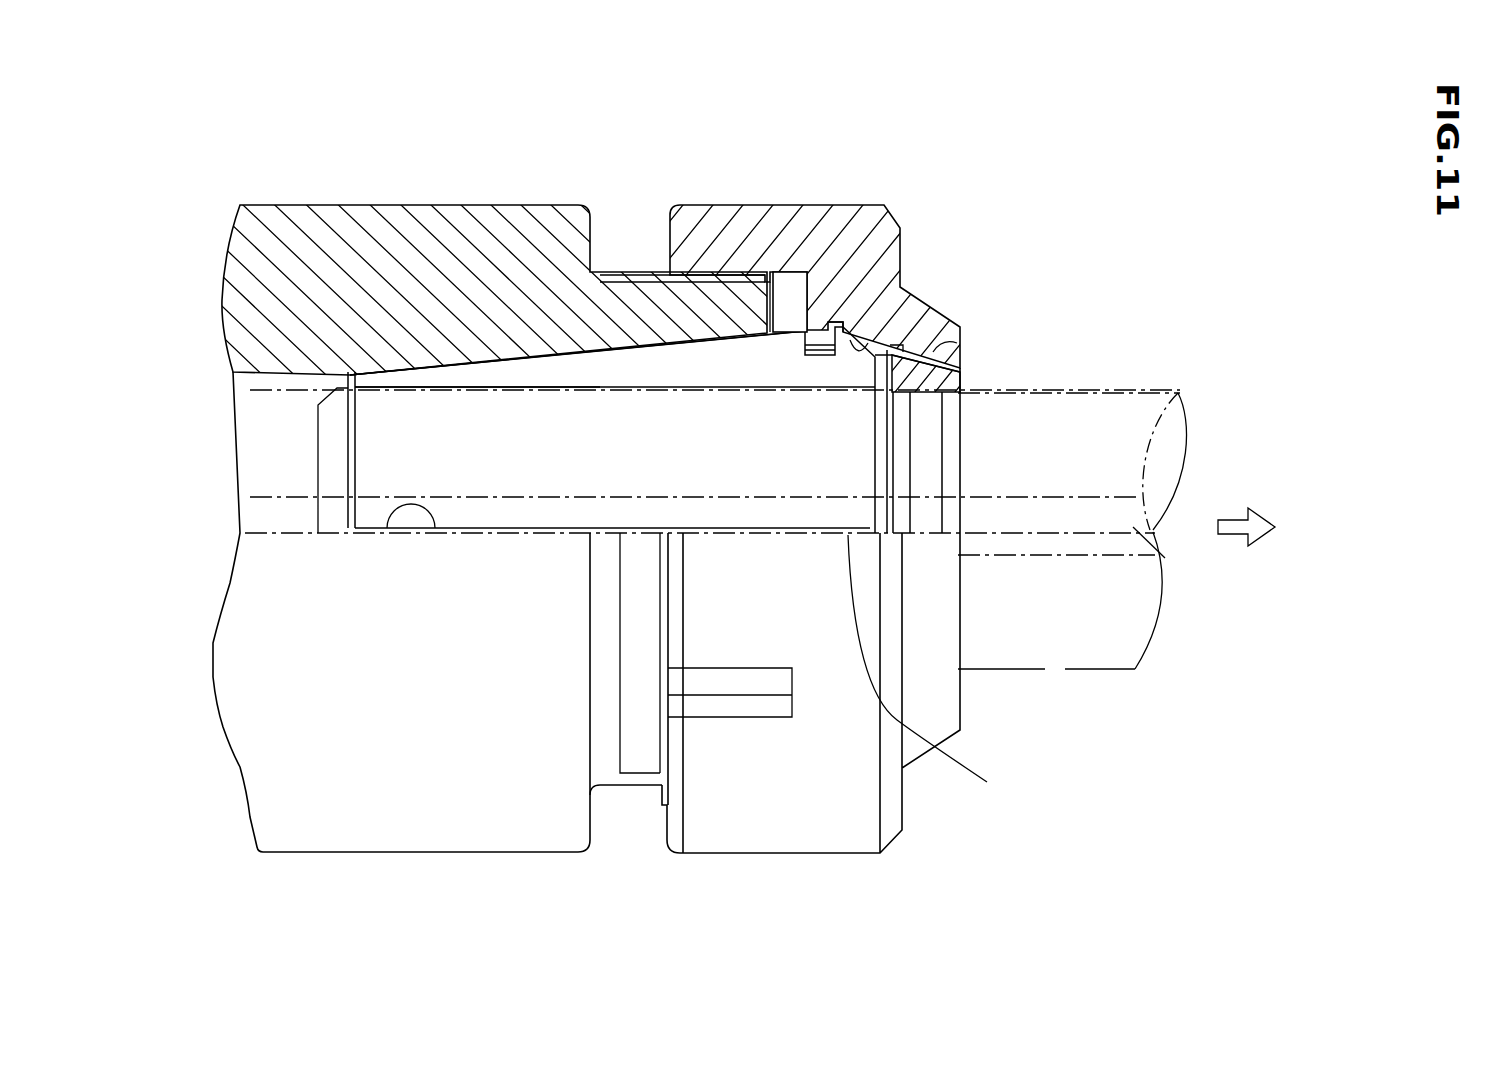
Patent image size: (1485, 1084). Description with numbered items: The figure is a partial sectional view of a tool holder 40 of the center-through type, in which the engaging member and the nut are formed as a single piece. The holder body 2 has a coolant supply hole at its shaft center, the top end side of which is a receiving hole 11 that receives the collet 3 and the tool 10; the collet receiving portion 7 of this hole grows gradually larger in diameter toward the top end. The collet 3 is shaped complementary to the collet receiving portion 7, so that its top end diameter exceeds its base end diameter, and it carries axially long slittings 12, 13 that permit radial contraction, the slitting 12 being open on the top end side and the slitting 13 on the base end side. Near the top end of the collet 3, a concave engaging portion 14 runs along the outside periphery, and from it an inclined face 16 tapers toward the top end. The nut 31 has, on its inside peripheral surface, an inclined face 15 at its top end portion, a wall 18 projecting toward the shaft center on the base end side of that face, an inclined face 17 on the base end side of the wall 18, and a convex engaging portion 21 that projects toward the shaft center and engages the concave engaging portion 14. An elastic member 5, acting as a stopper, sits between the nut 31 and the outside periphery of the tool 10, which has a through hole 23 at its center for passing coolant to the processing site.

The holder body 2 is at (272, 783).
The collet 3 is at (565, 378).
The elastic member 5 is at (975, 380).
The collet receiving portion 7 is at (638, 300).
The tool 10 is at (1055, 672).
The receiving hole 11 is at (498, 372).
The slitting 12 is at (932, 679).
The slitting 13 is at (427, 380).
The concave engaging portion 14 is at (817, 333).
The inclined face 15 is at (957, 340).
The inclined face 16 is at (857, 340).
The inclined face 17 is at (892, 347).
The wall 18 is at (935, 345).
The convex engaging portion 21 is at (830, 327).
The through hole 23 is at (1165, 558).
The nut 31 is at (720, 217).
The tool holder 40 is at (1140, 212).